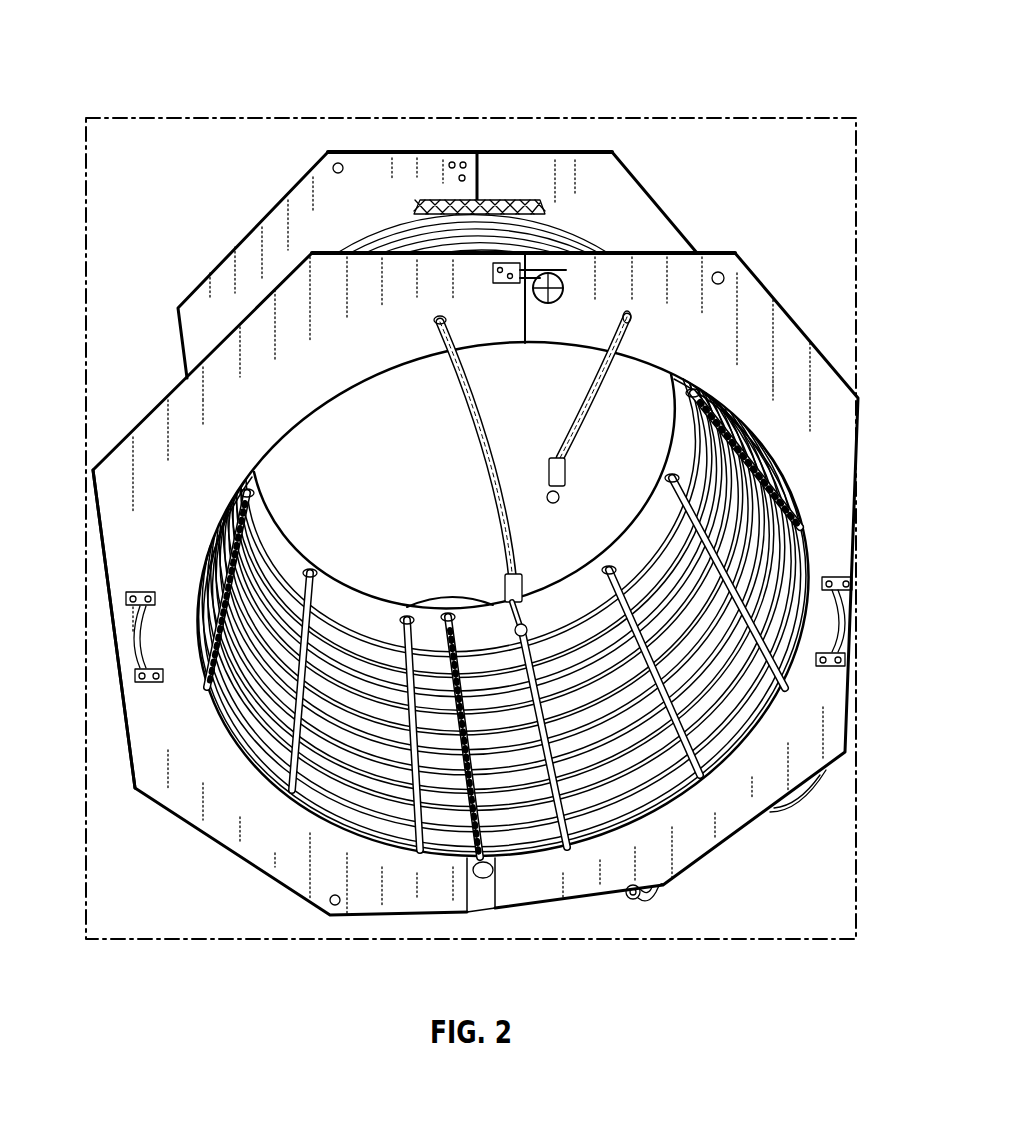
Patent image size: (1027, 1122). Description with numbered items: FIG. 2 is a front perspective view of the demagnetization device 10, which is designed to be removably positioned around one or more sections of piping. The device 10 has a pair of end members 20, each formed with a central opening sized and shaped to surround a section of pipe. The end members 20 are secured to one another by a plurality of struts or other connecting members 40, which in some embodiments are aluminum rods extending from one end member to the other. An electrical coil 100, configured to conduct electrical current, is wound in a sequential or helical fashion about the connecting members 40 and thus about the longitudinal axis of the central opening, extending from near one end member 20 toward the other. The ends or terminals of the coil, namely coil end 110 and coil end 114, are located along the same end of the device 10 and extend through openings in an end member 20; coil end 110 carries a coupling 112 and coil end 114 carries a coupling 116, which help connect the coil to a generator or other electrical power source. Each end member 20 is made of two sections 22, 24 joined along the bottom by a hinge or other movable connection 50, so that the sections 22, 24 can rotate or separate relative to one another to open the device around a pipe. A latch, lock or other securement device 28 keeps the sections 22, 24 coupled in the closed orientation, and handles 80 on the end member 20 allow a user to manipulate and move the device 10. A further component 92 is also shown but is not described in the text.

The demagnetization device 10 is at (103, 43).
The end member 20 is at (803, 328).
The end member section 22 is at (825, 425).
The end member section 24 is at (143, 530).
The securement device 28 is at (575, 268).
The connecting member 40 is at (667, 488).
The movable connection 50 is at (484, 879).
The handle 80 is at (127, 648).
The cable connector 92 is at (658, 902).
The electrical coil 100 is at (401, 223).
The coil end 110 is at (563, 400).
The coupling 112 is at (542, 492).
The coil end 114 is at (483, 482).
The coupling 116 is at (513, 587).